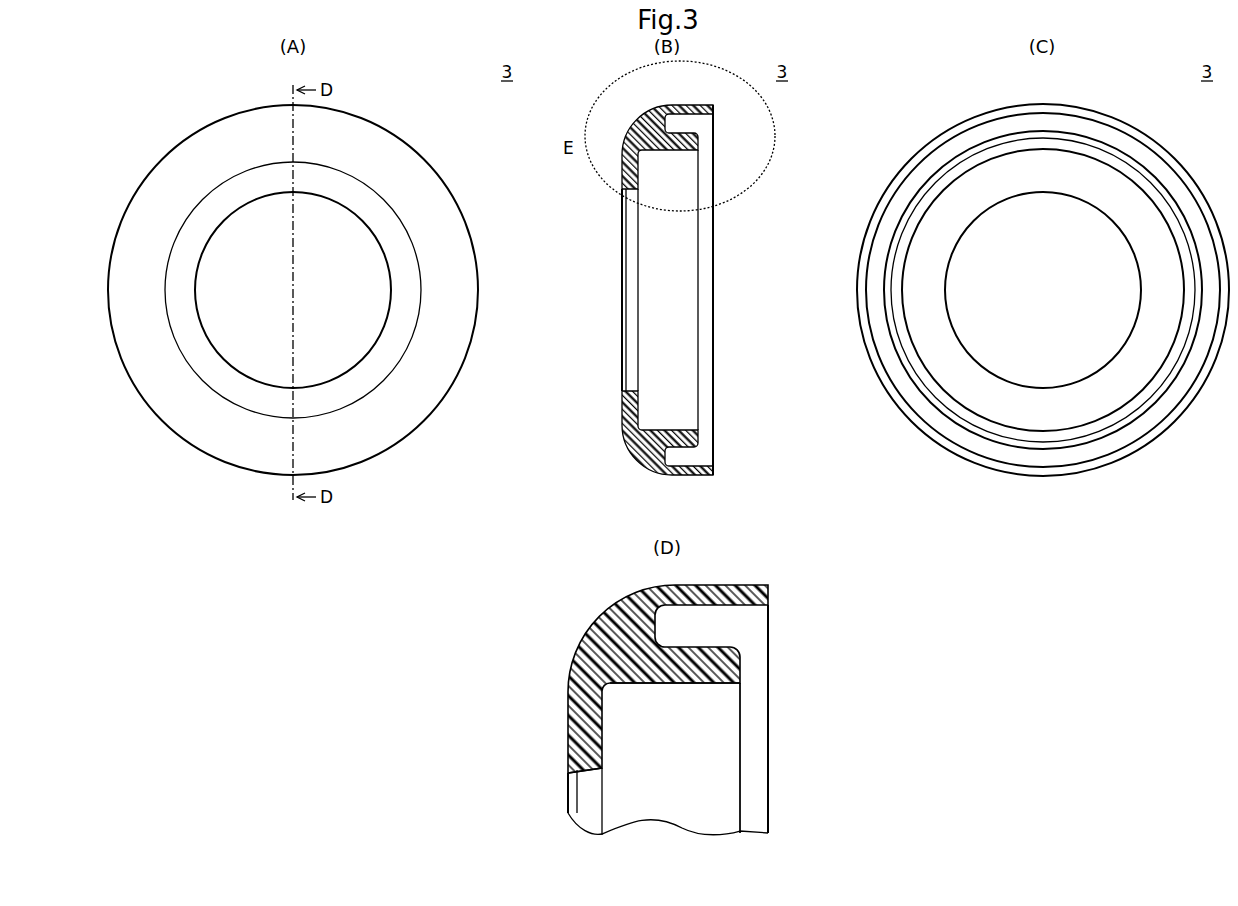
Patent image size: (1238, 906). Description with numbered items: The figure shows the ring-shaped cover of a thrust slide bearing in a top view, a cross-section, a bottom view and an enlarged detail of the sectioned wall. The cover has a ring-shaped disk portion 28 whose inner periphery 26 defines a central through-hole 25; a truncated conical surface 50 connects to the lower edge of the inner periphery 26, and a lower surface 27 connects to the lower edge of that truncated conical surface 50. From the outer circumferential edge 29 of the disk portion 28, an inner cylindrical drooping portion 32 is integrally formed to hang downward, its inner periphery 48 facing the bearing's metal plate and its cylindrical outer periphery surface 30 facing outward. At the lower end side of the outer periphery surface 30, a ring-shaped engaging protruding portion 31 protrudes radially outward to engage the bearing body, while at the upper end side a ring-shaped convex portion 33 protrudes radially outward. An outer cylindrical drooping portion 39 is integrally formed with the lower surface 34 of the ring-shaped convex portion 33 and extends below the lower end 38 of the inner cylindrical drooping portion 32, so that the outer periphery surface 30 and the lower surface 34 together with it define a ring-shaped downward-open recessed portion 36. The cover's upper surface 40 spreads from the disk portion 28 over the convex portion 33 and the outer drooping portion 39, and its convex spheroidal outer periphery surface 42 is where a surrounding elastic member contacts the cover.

The through-hole 25 is at (331, 225).
The inner periphery 26 is at (204, 325).
The lower surface 27 is at (640, 412).
The disk portion 28 is at (238, 388).
The outer circumferential edge 29 is at (264, 418).
The cylindrical outer periphery surface 30 is at (680, 448).
The ring-shaped engaging protruding portion 31 is at (712, 140).
The inner cylindrical drooping portion 32 is at (672, 149).
The ring-shaped convex portion 33 is at (444, 400).
The lower surface 34 is at (672, 477).
The ring-shaped downward-open recessed portion 36 is at (694, 124).
The lower end 38 is at (704, 277).
The outer cylindrical drooping portion 39 is at (686, 104).
The upper surface 40 is at (401, 294).
The convex spheroidal outer periphery surface 42 is at (360, 442).
The inner periphery 48 is at (660, 431).
The truncated conical surface 50 is at (640, 190).